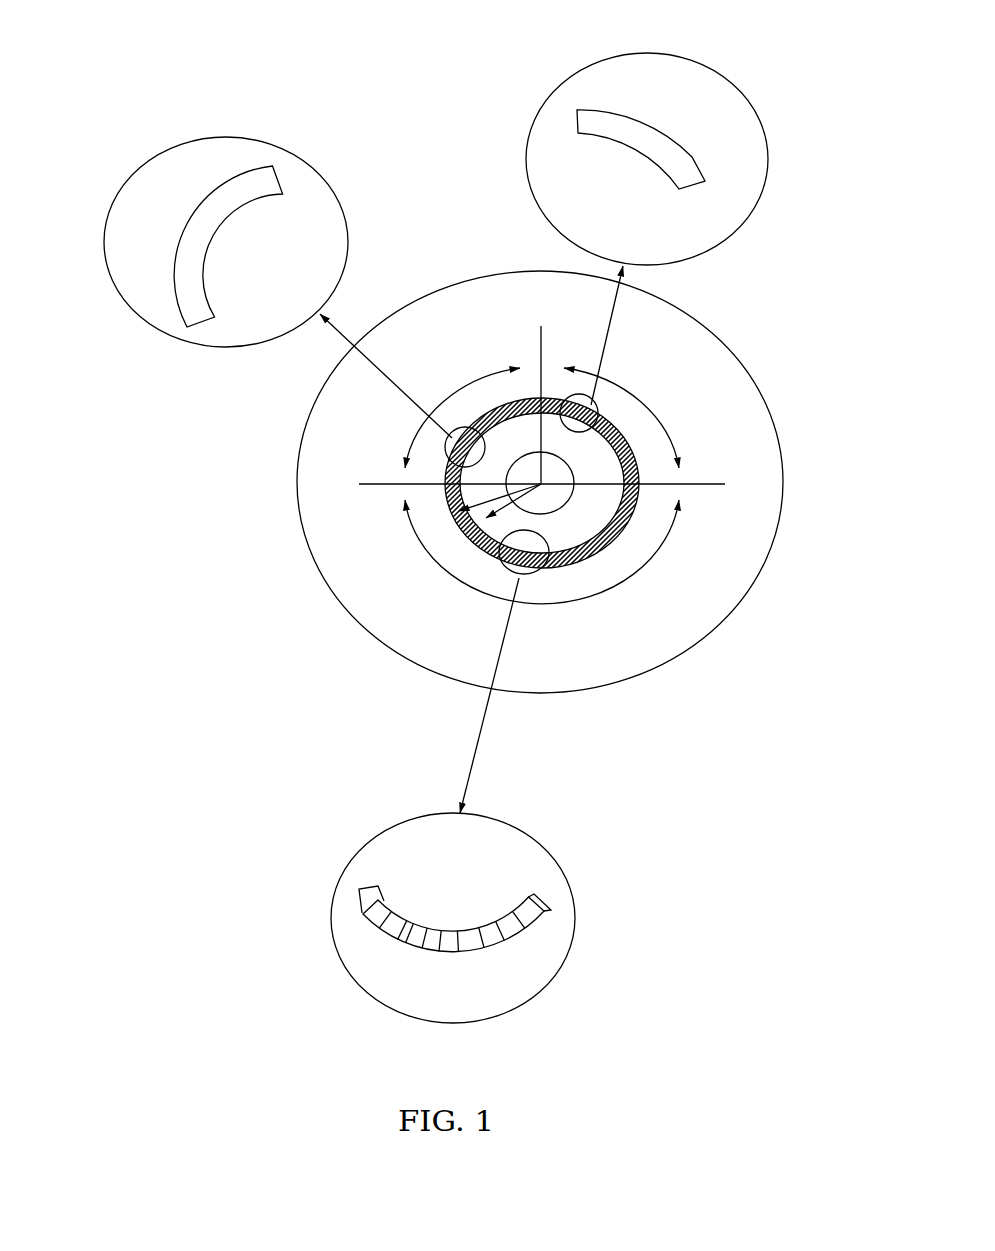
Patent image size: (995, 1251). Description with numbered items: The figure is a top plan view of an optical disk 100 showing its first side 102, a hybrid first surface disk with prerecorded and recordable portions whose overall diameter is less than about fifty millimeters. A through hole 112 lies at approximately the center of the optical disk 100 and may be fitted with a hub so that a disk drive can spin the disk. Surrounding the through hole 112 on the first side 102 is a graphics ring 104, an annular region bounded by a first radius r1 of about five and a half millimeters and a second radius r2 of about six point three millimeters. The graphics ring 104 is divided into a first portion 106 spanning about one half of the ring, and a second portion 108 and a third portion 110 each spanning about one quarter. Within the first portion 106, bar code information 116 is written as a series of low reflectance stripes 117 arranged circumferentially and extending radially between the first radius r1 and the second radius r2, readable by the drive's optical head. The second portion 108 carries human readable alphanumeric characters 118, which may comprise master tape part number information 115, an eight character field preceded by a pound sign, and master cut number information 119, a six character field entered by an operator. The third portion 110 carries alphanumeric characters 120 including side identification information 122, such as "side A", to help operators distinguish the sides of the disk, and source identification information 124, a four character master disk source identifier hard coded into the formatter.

The optical disk 100 is at (342, 607).
The first side 102 is at (591, 663).
The graphics ring 104 is at (629, 436).
The first portion 106 is at (608, 548).
The second portion 108 is at (476, 416).
The third portion 110 is at (608, 420).
The through hole 112 is at (558, 497).
The master tape part number information 115 is at (197, 210).
The bar code information 116 is at (518, 920).
The low reflectance stripes 117 is at (362, 914).
The alphanumeric characters 118 is at (174, 306).
The master cut number information 119 is at (177, 271).
The alphanumeric characters 120 is at (709, 170).
The side identification information 122 is at (594, 108).
The source identification information 124 is at (693, 155).
The first radius r1 is at (513, 506).
The second radius r2 is at (500, 496).